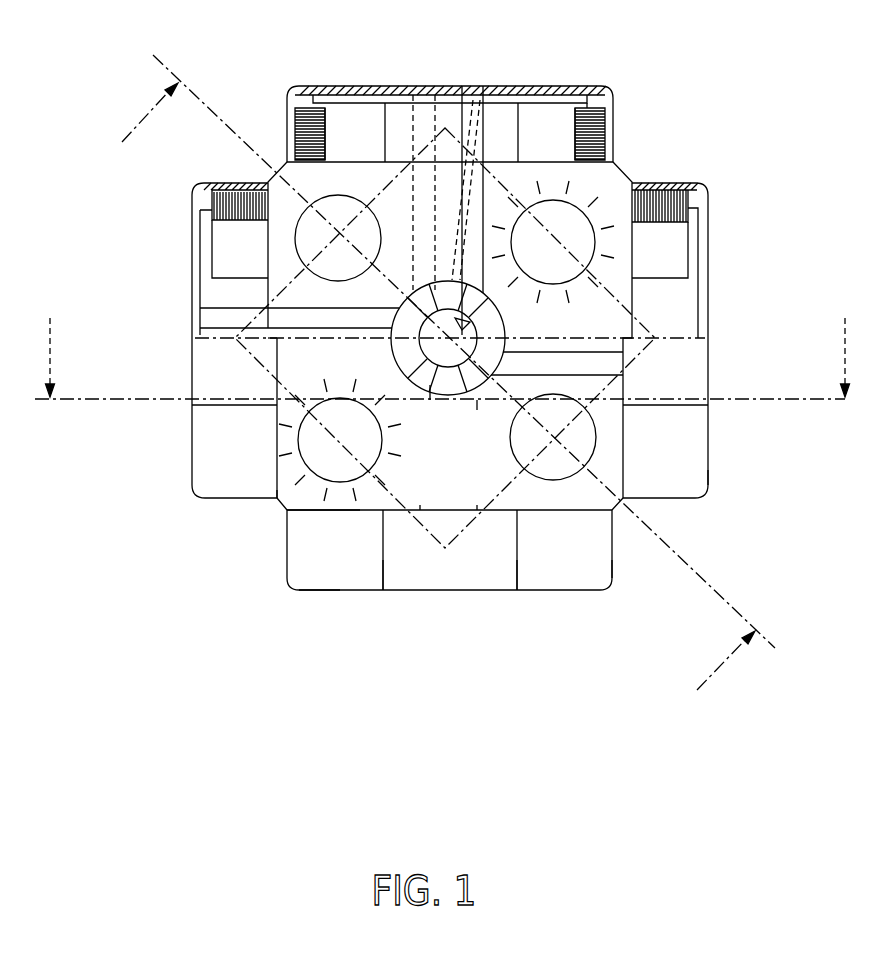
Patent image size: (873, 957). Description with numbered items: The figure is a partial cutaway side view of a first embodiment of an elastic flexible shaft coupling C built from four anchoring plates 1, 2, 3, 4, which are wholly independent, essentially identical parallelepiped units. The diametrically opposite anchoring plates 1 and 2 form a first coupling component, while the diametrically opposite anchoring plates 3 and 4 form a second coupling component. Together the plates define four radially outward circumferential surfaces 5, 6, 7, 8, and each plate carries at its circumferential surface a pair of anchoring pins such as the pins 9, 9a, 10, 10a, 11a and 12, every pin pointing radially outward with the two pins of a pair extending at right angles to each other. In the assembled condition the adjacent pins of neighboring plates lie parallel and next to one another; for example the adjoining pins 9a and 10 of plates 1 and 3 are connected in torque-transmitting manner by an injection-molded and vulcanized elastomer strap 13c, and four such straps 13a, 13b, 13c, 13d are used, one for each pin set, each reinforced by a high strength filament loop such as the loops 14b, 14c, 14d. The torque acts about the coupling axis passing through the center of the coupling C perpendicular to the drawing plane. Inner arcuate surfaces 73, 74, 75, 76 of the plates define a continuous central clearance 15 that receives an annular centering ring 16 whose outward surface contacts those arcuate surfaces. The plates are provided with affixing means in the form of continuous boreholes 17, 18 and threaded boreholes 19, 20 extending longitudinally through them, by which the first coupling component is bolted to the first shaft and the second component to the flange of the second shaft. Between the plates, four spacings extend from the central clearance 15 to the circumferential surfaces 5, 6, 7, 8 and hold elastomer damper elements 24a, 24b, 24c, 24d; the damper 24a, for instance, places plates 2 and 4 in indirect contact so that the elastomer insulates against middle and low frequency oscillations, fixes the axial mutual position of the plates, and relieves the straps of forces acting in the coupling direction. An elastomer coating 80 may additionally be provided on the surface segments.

The anchoring plate 1 is at (295, 178).
The anchoring plate 2 is at (593, 498).
The anchoring plate 3 is at (622, 182).
The anchoring plate 4 is at (282, 508).
The radially outward circumferential surface 5 is at (345, 160).
The radially outward circumferential surface 6 is at (268, 250).
The radially outward circumferential surface 7 is at (353, 510).
The radially outward circumferential surface 8 is at (635, 250).
The anchoring pin 9 is at (223, 232).
The anchoring pin 9a is at (347, 125).
The anchoring pin 10 is at (535, 118).
The anchoring pin 10a is at (675, 268).
The anchoring pin 11a is at (527, 577).
The anchoring pin 12 is at (363, 577).
The elastomer strap 13a is at (332, 591).
The elastomer strap 13b is at (707, 487).
The elastomer strap 13c is at (592, 142).
The elastomer strap 13d is at (225, 188).
The high strength filament loop 14b is at (633, 245).
The high strength filament loop 14c is at (604, 108).
The high strength filament loop 14d is at (222, 212).
The central clearance 15 is at (488, 412).
The annular centering ring 16 is at (445, 388).
The continuous borehole 17 is at (340, 207).
The continuous borehole 18 is at (612, 562).
The threaded borehole 19 is at (645, 205).
The threaded borehole 20 is at (317, 443).
The elastomer damper element 24a is at (428, 508).
The elastomer damper element 24b is at (633, 357).
The elastomer damper element 24c is at (462, 140).
The elastomer damper element 24d is at (212, 320).
The inner arcuate surface 73 is at (420, 300).
The inner arcuate surface 74 is at (503, 318).
The inner arcuate surface 75 is at (473, 372).
The inner arcuate surface 76 is at (391, 357).
The elastomer coating 80 is at (482, 258).
The flexible shaft coupling C is at (418, 676).